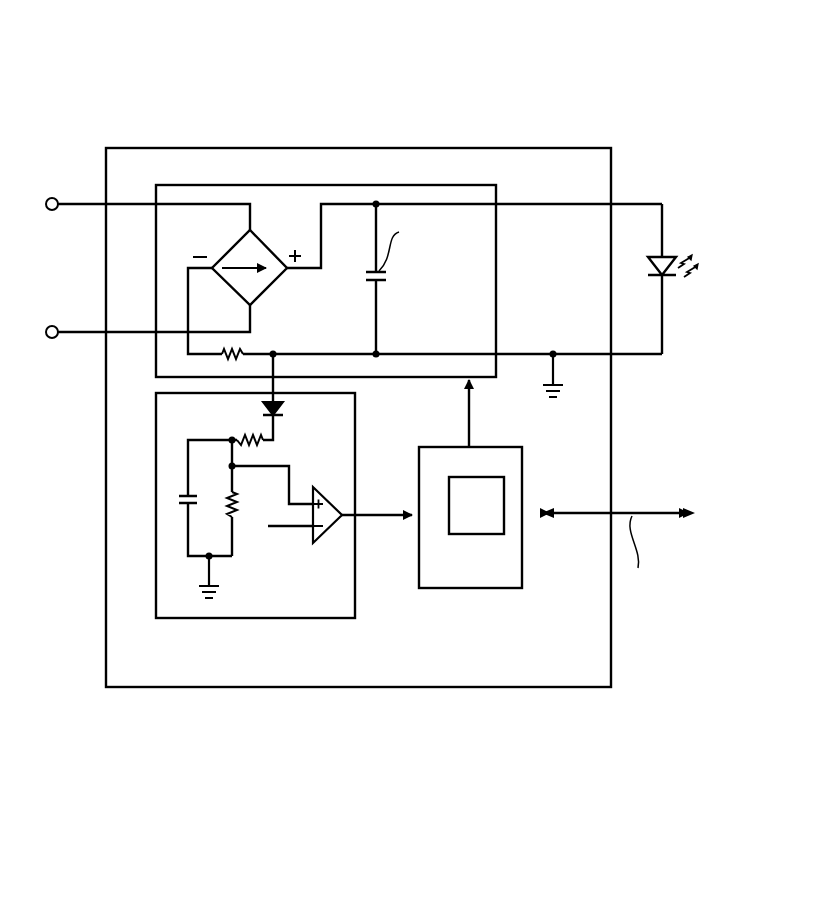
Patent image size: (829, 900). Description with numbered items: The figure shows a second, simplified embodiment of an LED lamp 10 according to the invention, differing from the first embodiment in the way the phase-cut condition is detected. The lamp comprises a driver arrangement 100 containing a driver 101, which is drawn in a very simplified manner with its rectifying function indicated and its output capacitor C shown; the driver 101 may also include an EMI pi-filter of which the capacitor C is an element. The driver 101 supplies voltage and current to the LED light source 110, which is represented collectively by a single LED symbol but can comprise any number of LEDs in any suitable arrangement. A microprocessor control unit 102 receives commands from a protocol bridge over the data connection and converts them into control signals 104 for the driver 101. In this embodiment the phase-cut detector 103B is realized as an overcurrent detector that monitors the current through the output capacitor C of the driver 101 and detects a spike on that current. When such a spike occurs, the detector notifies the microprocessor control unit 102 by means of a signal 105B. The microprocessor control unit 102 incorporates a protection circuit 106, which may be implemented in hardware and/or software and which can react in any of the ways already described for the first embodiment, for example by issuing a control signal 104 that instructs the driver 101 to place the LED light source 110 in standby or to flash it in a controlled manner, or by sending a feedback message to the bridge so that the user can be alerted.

The LED lamp 10 is at (566, 108).
The driver arrangement 100 is at (517, 687).
The driver 101 is at (385, 185).
The microprocessor control unit 102 is at (477, 588).
The phase-cut detector 103B is at (300, 618).
The control signal 104 is at (469, 420).
The signal 105B is at (378, 512).
The protection circuit 106 is at (483, 477).
The LED light source 110 is at (666, 278).